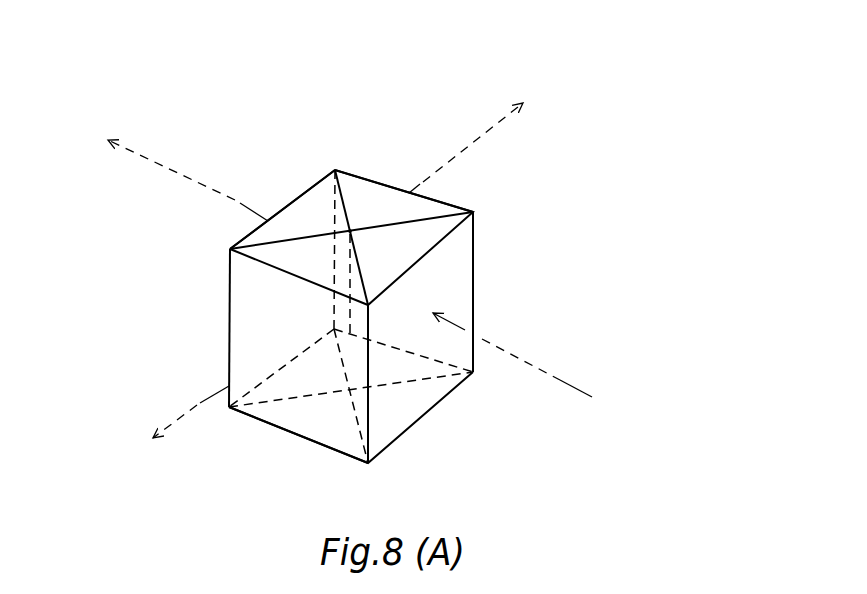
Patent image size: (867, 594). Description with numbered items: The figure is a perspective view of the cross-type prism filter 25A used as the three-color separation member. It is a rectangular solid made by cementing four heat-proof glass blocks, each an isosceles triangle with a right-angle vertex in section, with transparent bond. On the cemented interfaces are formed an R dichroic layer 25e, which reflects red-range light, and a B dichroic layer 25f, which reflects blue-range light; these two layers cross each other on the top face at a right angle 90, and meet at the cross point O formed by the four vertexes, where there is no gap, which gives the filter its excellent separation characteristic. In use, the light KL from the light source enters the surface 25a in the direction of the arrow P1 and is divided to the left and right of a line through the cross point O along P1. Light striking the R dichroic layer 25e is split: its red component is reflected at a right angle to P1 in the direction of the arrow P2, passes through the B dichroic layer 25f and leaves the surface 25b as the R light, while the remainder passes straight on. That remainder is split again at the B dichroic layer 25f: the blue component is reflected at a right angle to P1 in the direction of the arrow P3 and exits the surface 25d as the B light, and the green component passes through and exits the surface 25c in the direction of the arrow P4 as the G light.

The cross-type prism filter 25A is at (226, 70).
The surface 25a is at (463, 258).
The surface 25b is at (286, 428).
The surface 25c is at (247, 235).
The surface 25d is at (430, 197).
The R dichroic layer 25e is at (495, 222).
The B dichroic layer 25f is at (348, 175).
The cross point O is at (352, 233).
The 90 degree angle between dichroic surfaces 90 is at (382, 228).
The arrow P1 is at (523, 363).
The arrow P2 is at (192, 410).
The arrow P3 is at (495, 131).
The arrow P4 is at (187, 180).